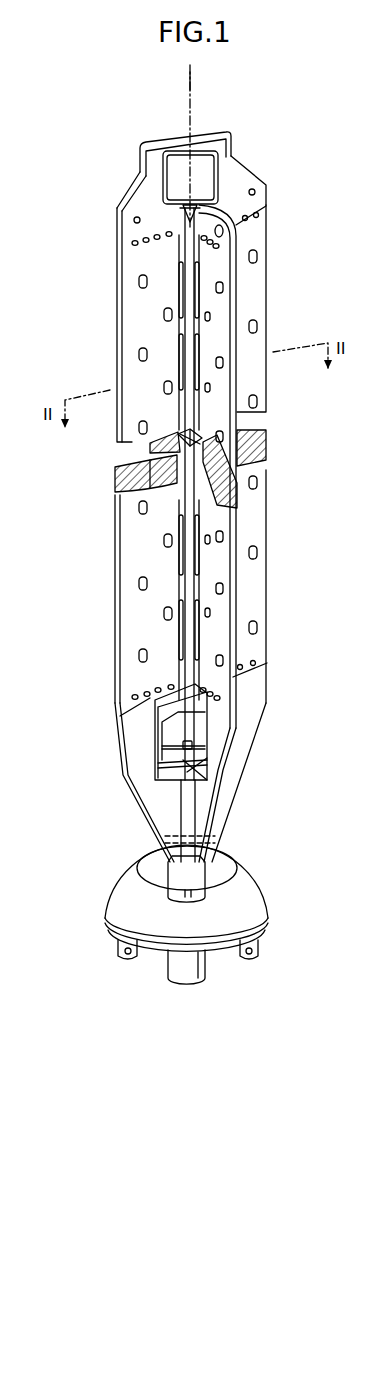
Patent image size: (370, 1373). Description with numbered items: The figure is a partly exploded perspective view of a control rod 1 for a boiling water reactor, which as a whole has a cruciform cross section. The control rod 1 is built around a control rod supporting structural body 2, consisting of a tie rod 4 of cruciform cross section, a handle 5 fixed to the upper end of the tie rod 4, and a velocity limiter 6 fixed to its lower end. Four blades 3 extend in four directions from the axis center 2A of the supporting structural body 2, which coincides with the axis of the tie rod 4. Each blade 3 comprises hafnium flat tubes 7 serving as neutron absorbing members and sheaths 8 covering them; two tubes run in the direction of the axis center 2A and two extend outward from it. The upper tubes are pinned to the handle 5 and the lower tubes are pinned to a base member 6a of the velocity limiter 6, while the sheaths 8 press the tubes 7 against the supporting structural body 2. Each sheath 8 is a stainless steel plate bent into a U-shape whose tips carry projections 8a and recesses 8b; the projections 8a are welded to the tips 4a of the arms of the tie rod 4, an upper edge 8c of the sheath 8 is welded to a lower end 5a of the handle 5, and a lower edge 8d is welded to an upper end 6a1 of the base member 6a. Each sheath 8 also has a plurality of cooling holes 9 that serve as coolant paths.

The control rod 1 is at (268, 152).
The control rod supporting structural body 2 is at (170, 128).
The axis center 2A is at (192, 82).
The blade 3 is at (268, 272).
The tie rod 4 is at (150, 445).
The tip of arm of tie rod 4a is at (177, 478).
The handle 5 is at (270, 194).
The lower end of handle 5a is at (176, 226).
The velocity limiter 6 is at (260, 872).
The base member of velocity limiter 6a is at (258, 712).
The upper end of velocity limiter base member 6a1 is at (148, 703).
The hafnium flat tube 7 is at (268, 448).
The sheath 8 is at (248, 522).
The projection 8a is at (180, 330).
The recess 8b is at (178, 295).
The upper edge of sheath 8c is at (170, 238).
The lower edge of sheath 8d is at (150, 693).
The cooling hole 9 is at (138, 655).